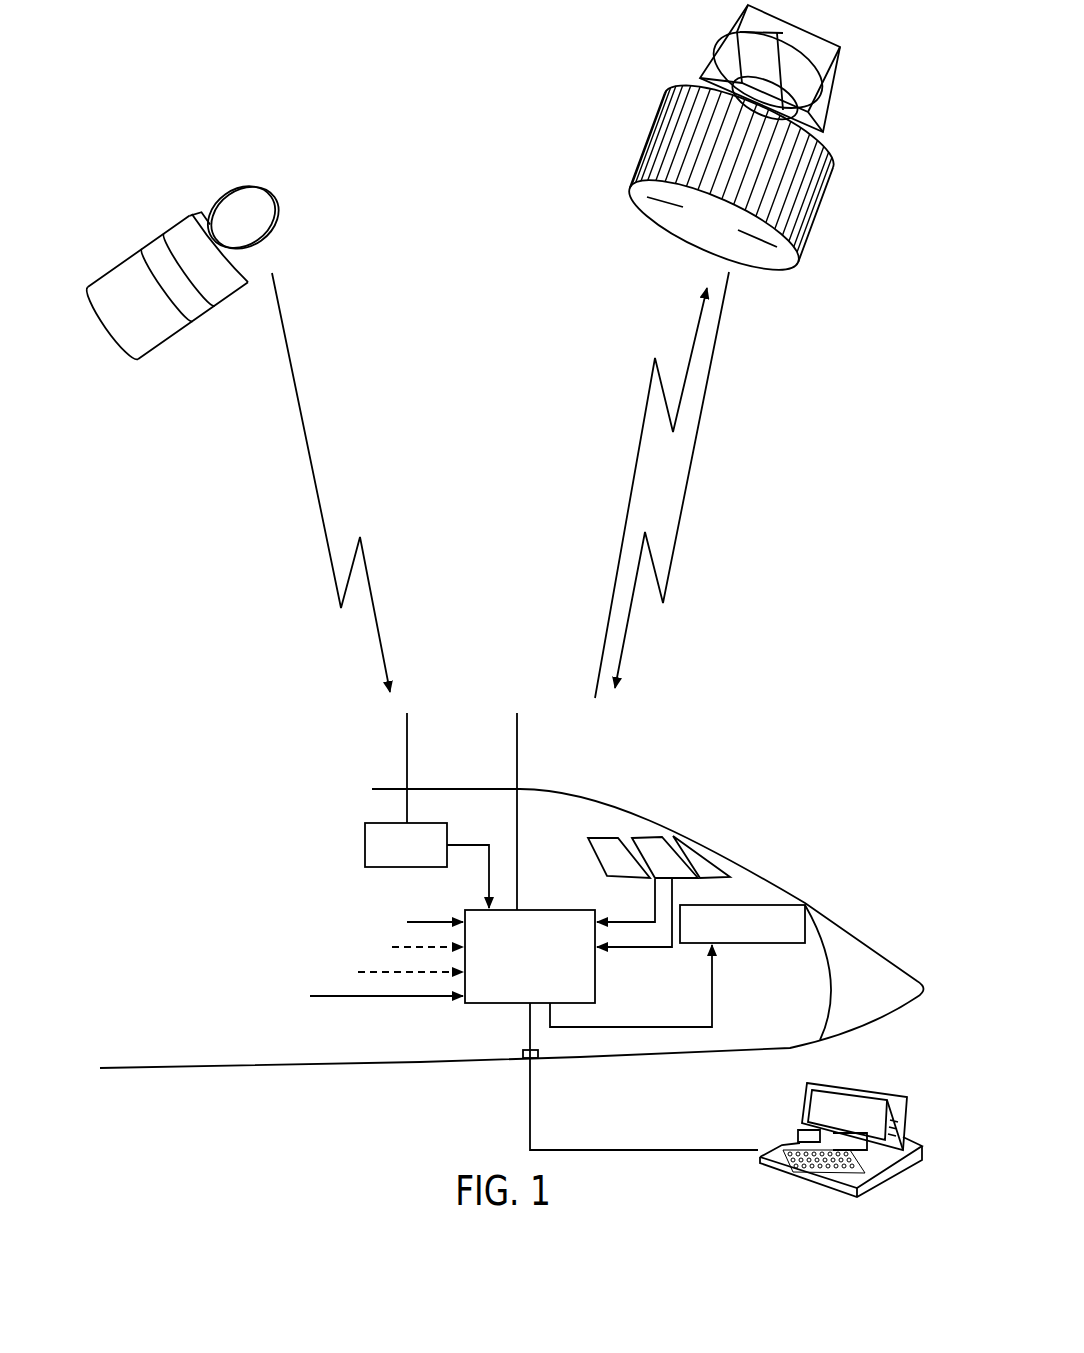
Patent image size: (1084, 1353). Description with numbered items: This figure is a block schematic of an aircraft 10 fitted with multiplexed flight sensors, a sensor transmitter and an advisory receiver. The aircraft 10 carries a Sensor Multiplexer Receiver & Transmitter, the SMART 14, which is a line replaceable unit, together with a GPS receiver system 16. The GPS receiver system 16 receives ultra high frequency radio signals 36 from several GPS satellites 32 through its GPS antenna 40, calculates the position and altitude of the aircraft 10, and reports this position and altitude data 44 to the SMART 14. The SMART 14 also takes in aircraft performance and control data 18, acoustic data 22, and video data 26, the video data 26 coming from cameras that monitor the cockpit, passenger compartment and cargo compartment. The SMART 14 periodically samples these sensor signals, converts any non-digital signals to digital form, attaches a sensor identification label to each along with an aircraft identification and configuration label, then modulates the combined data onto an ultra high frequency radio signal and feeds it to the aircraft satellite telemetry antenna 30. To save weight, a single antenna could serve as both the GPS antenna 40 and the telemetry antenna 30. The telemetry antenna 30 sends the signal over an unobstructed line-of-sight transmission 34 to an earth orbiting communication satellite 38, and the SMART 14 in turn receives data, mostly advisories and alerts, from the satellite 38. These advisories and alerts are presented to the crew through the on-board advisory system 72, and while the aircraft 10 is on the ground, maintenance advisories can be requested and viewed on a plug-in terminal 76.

The aircraft 10 is at (808, 973).
The Sensor Multiplexer Receiver & Transmitter (SMART) 14 is at (492, 993).
The GPS receiver system 16 is at (365, 845).
The aircraft performance and control data 18 is at (342, 932).
The acoustic data 22 is at (643, 924).
The video data 26 is at (657, 948).
The aircraft satellite telemetry antenna 30 is at (517, 728).
The GPS satellite 32 is at (190, 232).
The communication satellite link transmission 34 is at (640, 423).
The ultra high frequency radio signals 36 is at (288, 487).
The communication satellite 38 is at (777, 163).
The GPS antenna 40 is at (407, 750).
The position and altitude data 44 is at (462, 845).
The on-board advisory system 72 is at (730, 905).
The plug-in terminal 76 is at (847, 1090).